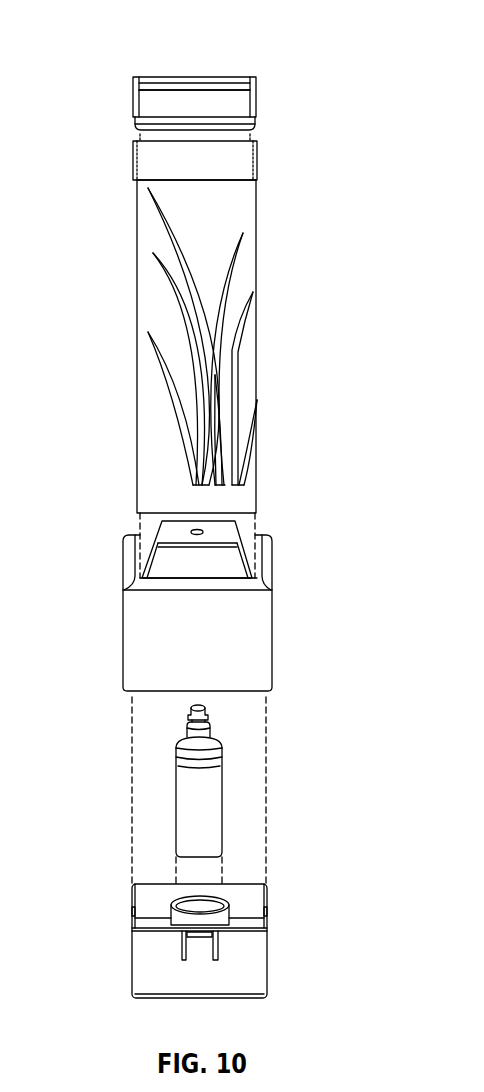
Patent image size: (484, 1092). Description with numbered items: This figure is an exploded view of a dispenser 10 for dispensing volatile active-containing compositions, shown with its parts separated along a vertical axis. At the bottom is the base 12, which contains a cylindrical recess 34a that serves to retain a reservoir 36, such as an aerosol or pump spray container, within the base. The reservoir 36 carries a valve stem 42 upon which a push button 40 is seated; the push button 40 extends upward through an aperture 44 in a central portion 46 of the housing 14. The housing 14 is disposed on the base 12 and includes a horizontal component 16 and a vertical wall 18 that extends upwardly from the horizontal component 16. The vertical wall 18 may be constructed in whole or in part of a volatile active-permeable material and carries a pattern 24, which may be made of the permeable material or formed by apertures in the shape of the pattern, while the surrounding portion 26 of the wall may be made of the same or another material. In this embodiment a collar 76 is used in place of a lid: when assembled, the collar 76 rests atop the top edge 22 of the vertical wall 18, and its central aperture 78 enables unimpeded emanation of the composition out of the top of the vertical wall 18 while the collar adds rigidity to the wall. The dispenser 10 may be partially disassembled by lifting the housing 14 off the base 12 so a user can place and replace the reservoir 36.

The dispenser 10 is at (66, 45).
The base 12 is at (268, 960).
The housing 14 is at (272, 630).
The horizontal component 16 is at (263, 580).
The vertical wall 18 is at (257, 398).
The top edge 22 is at (257, 165).
The pattern 24 is at (235, 350).
The portion of the wall surrounding the pattern 26 is at (235, 304).
The cylindrical recess 34a is at (203, 890).
The reservoir 36 is at (208, 812).
The push button 40 is at (190, 712).
The valve stem 42 is at (206, 711).
The aperture 44 is at (210, 514).
The central portion 46 is at (178, 528).
The collar 76 is at (257, 97).
The central aperture 78 is at (195, 98).